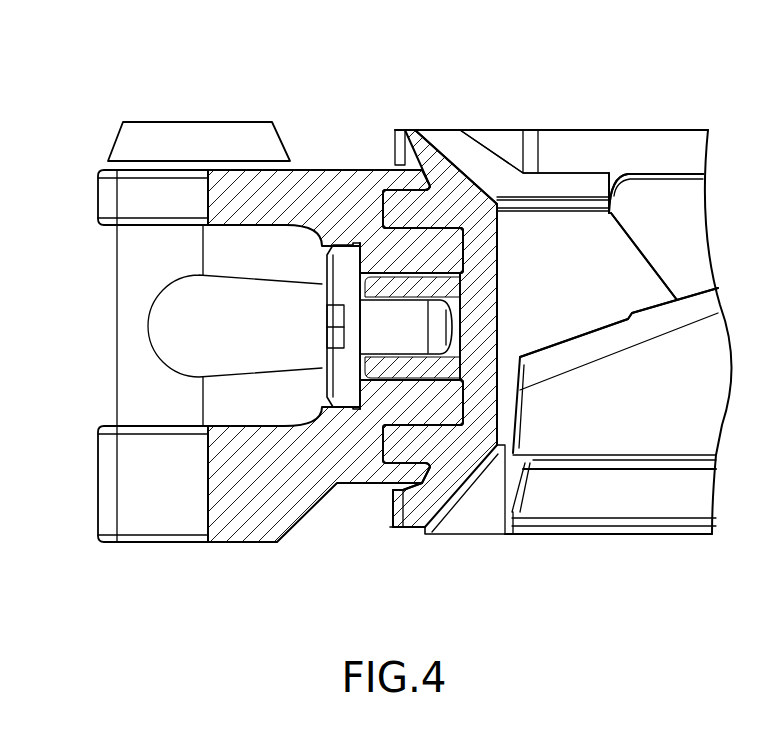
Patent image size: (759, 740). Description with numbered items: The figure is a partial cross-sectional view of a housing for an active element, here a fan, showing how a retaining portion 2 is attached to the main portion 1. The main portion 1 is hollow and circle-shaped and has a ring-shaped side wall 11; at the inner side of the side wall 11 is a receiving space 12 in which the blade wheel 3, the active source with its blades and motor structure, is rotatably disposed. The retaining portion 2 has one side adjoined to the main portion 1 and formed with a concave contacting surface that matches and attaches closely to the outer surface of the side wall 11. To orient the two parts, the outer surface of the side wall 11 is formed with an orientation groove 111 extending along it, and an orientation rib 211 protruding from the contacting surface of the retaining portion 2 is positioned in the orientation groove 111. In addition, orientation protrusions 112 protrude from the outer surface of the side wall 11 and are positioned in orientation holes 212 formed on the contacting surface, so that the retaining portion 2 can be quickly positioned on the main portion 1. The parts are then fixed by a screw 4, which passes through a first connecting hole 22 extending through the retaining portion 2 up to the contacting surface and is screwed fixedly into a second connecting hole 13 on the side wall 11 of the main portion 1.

The main portion 1 is at (596, 114).
The retaining portion 2 is at (98, 278).
The blade wheel 3 is at (668, 172).
The screw 4 is at (317, 318).
The side wall 11 is at (393, 508).
The receiving space 12 is at (550, 272).
The second connecting hole 13 is at (460, 470).
The first connecting hole 22 is at (373, 385).
The orientation groove 111 is at (484, 200).
The orientation protrusion 112 is at (382, 208).
The orientation rib 211 is at (443, 250).
The orientation hole 212 is at (377, 211).